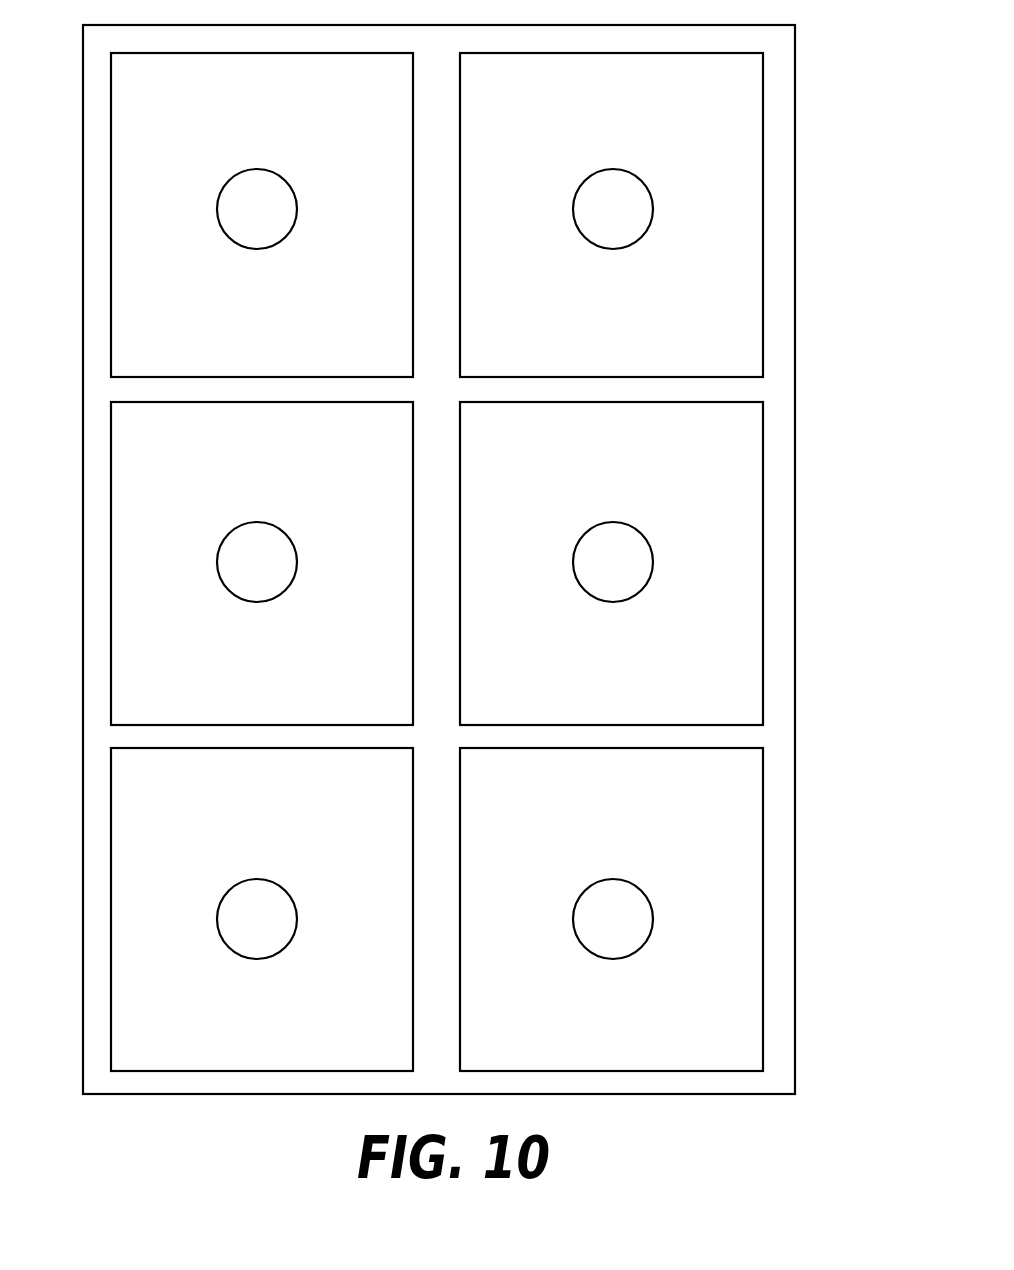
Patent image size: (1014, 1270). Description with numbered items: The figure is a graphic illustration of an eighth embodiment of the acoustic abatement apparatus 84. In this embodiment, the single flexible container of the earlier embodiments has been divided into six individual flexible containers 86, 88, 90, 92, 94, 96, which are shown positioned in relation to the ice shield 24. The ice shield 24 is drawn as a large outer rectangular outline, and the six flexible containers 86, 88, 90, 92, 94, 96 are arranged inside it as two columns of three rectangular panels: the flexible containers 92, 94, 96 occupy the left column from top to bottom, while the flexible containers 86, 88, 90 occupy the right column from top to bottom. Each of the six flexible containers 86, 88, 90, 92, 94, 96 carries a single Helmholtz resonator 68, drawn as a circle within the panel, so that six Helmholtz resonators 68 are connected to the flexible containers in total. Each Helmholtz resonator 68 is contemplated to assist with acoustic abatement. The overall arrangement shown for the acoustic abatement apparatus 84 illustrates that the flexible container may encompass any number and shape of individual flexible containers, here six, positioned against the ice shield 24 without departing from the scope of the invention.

The acoustic abatement apparatus 84 is at (467, 559).
The ice shield 24 is at (795, 203).
The flexible container 86 is at (763, 112).
The flexible container 88 is at (763, 573).
The flexible container 90 is at (763, 850).
The flexible container 92 is at (111, 248).
The flexible container 94 is at (111, 647).
The flexible container 96 is at (111, 904).
The Helmholtz resonator 68 is at (284, 238).